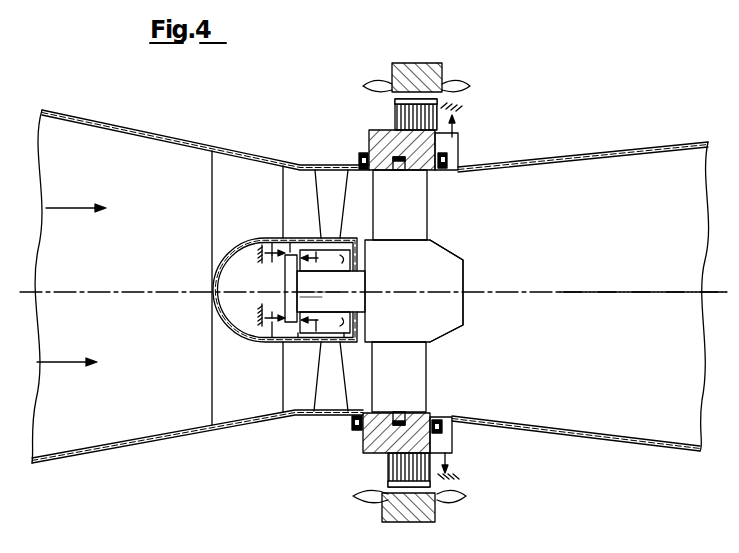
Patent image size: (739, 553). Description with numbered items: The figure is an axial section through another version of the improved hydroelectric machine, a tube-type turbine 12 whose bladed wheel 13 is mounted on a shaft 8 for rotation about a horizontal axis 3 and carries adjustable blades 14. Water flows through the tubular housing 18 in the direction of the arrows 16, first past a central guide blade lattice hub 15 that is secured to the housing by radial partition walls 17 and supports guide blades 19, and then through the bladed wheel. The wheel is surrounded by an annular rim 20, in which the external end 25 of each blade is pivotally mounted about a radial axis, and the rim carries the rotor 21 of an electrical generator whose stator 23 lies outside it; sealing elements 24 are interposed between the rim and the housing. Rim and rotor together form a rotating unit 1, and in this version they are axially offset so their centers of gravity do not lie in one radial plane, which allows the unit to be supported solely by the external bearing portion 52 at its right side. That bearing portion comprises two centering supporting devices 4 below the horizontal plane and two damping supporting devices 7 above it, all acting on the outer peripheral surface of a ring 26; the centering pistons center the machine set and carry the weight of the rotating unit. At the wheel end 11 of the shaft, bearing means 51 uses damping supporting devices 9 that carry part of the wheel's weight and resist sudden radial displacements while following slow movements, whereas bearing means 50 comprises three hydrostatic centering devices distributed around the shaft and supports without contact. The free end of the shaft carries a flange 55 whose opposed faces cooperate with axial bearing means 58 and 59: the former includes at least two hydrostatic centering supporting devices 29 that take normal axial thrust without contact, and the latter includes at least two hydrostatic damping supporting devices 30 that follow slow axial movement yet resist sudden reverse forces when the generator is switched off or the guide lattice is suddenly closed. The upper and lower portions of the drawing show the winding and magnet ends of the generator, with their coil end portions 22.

The rotating unit 1 is at (358, 164).
The horizontal axis 3 is at (615, 295).
The centering supporting device 4 is at (288, 270).
The damping supporting device 7 is at (452, 118).
The shaft 8 is at (296, 297).
The damping supporting device 9 is at (325, 292).
The wheel end 11 is at (358, 279).
The tube-type turbine 12 is at (467, 235).
The bladed wheel 13 is at (444, 331).
The adjustable blades 14 is at (420, 399).
The guide blade lattice hub 15 is at (240, 322).
The arrows 16 is at (46, 210).
The radial partition walls 17 is at (222, 212).
The tubular housing 18 is at (200, 433).
The guide blades 19 is at (330, 179).
The rim 20 is at (458, 150).
The rotor 21 is at (393, 114).
The coil end 22 is at (388, 103).
The stator 23 is at (452, 50).
The sealing elements 24 is at (357, 158).
The external end 25 is at (399, 172).
The ring 26 is at (450, 448).
The hydrostatic centering supporting device 29 is at (286, 222).
The hydrostatic damping supporting device 30 is at (266, 336).
The bearing means 50 is at (302, 318).
The bearing means 51 is at (344, 341).
The bearing portion 52 is at (458, 131).
The flange 55 is at (280, 300).
The axial bearing means 58 is at (298, 342).
The axial bearing means 59 is at (272, 246).